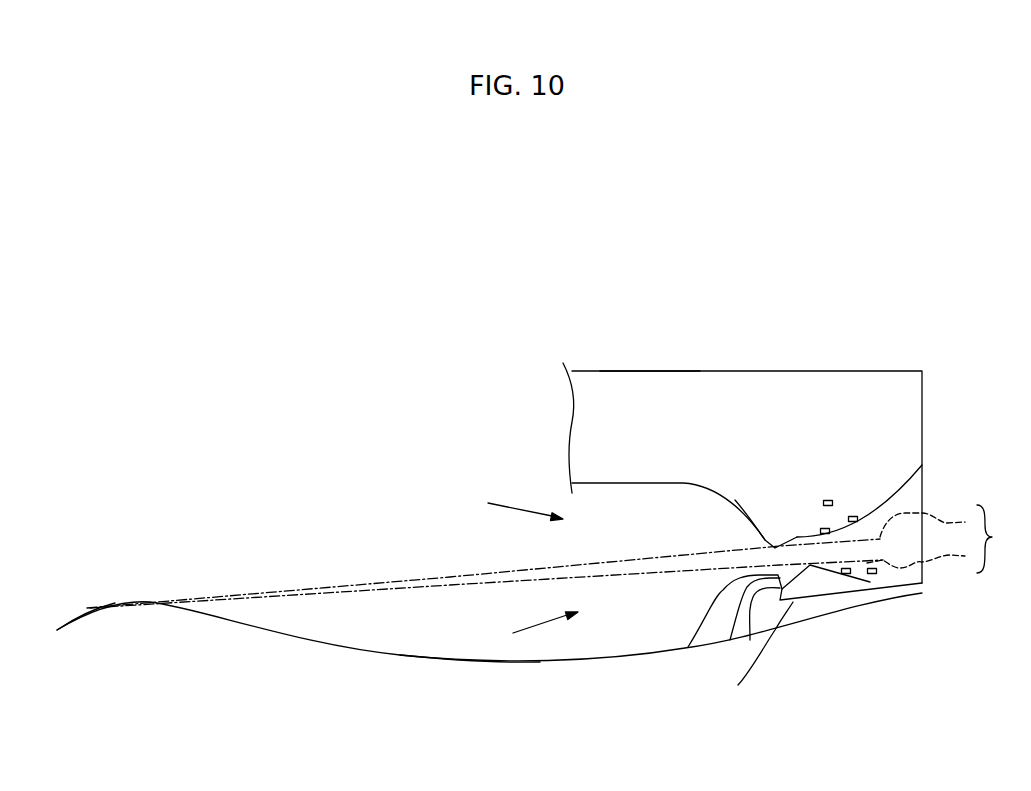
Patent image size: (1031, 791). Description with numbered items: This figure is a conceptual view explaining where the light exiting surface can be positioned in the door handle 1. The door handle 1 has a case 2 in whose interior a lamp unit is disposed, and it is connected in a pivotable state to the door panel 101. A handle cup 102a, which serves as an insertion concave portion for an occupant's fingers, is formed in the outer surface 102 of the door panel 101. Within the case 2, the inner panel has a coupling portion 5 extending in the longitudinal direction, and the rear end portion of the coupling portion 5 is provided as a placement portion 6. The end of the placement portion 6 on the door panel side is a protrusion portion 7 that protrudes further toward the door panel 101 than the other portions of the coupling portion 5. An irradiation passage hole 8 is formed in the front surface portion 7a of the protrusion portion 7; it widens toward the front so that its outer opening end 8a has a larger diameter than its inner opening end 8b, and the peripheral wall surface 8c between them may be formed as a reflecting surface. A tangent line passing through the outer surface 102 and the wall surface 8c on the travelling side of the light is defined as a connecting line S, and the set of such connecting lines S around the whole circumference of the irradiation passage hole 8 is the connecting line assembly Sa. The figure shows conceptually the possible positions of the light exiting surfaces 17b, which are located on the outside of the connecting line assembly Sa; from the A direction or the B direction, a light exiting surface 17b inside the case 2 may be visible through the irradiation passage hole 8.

The door handle 1 is at (658, 368).
The case 2 is at (689, 368).
The coupling portion 5 is at (597, 368).
The placement portion 6 is at (922, 585).
The protrusion portion 7 is at (750, 640).
The front surface portion 7a is at (765, 541).
The irradiation passage hole 8 is at (688, 647).
The outer opening end 8a is at (738, 685).
The inner opening end 8b is at (922, 465).
The wall surface 8c is at (730, 640).
The light exiting surface 17b is at (797, 537).
The door panel 101 is at (395, 622).
The outer surface 102 is at (67, 620).
The handle cup 102a is at (470, 634).
The connecting line S is at (922, 539).
The connecting line assembly Sa is at (998, 539).
The A direction A is at (515, 508).
The B direction B is at (537, 627).